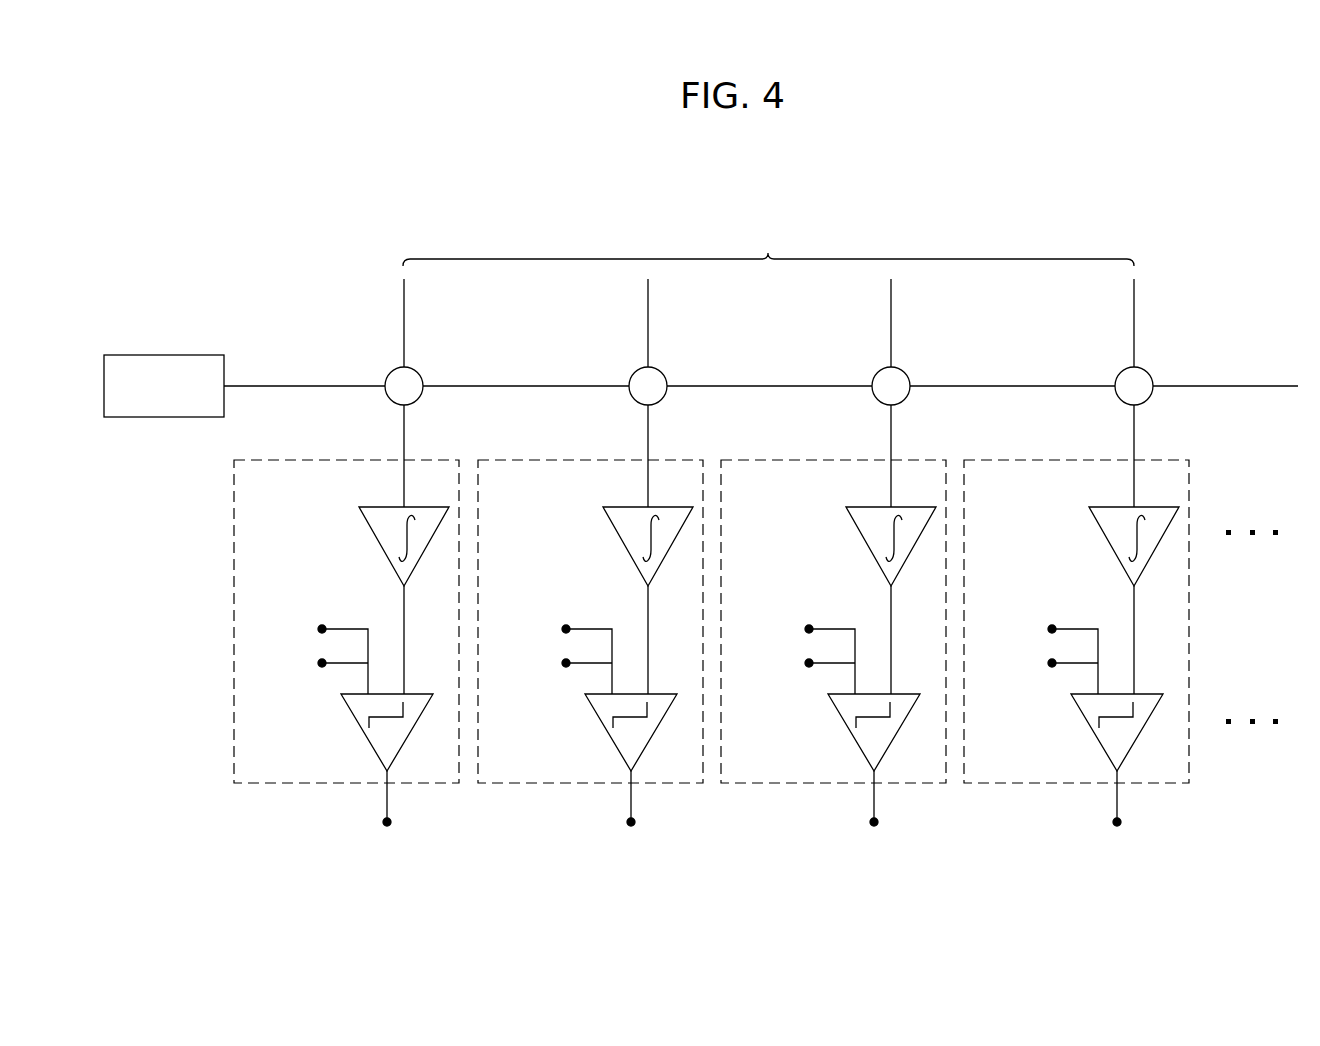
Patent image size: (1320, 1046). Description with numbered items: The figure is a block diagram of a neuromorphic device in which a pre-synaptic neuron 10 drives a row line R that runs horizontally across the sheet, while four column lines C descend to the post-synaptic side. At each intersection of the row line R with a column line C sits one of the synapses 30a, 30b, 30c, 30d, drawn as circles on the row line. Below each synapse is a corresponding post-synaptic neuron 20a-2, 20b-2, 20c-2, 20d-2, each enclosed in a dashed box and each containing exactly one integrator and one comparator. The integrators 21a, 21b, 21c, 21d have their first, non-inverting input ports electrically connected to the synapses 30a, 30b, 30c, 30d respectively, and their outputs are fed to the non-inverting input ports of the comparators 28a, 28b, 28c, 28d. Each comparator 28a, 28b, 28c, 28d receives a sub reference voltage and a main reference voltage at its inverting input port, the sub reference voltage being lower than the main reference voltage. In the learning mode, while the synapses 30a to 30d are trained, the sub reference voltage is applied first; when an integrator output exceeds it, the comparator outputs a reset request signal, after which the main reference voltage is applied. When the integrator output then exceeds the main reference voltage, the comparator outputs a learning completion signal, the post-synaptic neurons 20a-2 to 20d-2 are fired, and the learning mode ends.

The pre-synaptic neuron 10 is at (203, 354).
The column line C is at (768, 244).
The row line R is at (1238, 384).
The synapse 30a is at (409, 380).
The synapse 30b is at (653, 380).
The synapse 30c is at (896, 380).
The synapse 30d is at (1139, 380).
The post-synaptic neuron 20a-2 is at (346, 627).
The post-synaptic neuron 20b-2 is at (590, 627).
The post-synaptic neuron 20c-2 is at (833, 627).
The post-synaptic neuron 20d-2 is at (1076, 627).
The integrator 21a is at (378, 542).
The integrator 21b is at (622, 542).
The integrator 21c is at (865, 542).
The integrator 21d is at (1108, 542).
The comparator 28a is at (365, 742).
The comparator 28b is at (609, 742).
The comparator 28c is at (852, 742).
The comparator 28d is at (1095, 742).